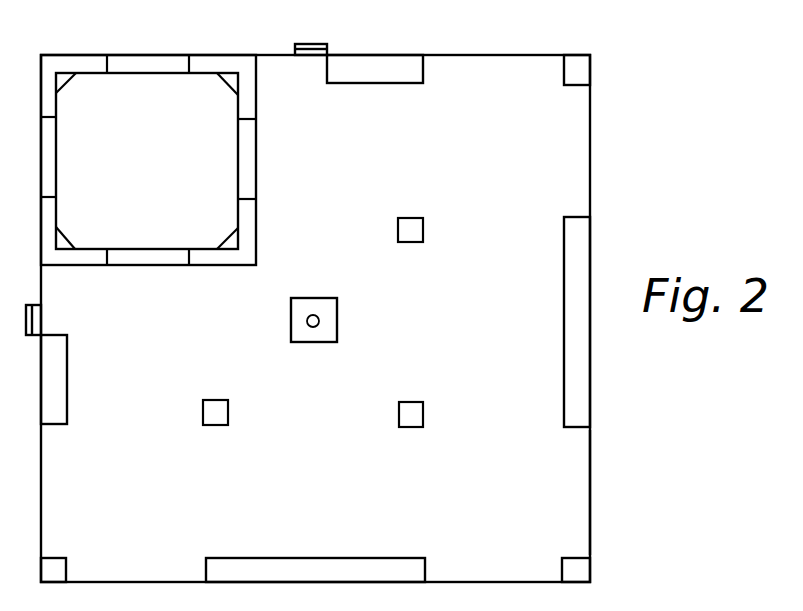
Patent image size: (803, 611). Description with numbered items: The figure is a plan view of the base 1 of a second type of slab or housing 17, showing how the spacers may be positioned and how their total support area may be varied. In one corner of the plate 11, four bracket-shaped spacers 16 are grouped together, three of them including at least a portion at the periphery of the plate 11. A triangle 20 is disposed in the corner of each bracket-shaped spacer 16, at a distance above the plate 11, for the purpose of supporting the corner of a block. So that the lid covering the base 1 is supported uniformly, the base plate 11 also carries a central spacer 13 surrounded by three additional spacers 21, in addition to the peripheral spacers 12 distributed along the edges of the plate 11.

The base 1 is at (610, 131).
The plate 11 is at (575, 503).
The peripheral spacers 12 is at (568, 227).
The central spacer 13 is at (328, 330).
The bracket-shaped spacers 16 is at (180, 198).
The slab or housing 17 is at (197, 282).
The triangle 20 is at (62, 80).
The additional spacers 21 is at (403, 413).